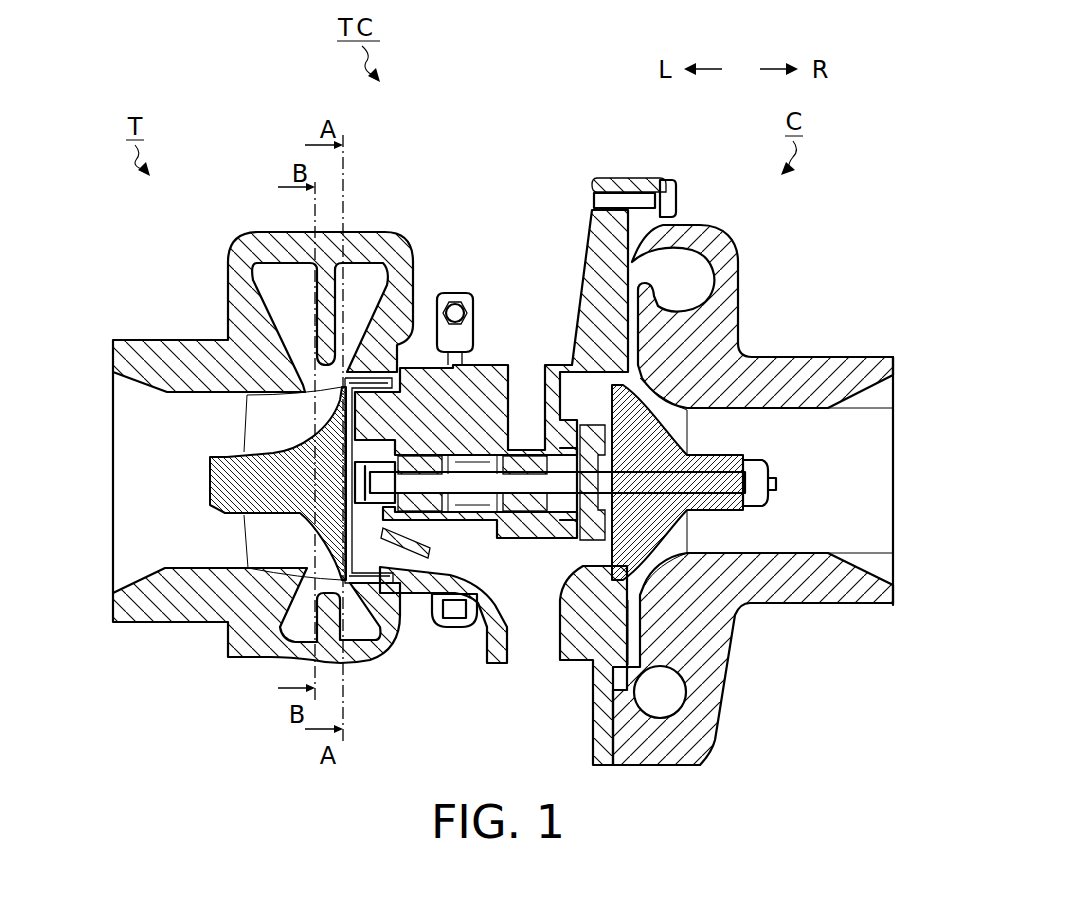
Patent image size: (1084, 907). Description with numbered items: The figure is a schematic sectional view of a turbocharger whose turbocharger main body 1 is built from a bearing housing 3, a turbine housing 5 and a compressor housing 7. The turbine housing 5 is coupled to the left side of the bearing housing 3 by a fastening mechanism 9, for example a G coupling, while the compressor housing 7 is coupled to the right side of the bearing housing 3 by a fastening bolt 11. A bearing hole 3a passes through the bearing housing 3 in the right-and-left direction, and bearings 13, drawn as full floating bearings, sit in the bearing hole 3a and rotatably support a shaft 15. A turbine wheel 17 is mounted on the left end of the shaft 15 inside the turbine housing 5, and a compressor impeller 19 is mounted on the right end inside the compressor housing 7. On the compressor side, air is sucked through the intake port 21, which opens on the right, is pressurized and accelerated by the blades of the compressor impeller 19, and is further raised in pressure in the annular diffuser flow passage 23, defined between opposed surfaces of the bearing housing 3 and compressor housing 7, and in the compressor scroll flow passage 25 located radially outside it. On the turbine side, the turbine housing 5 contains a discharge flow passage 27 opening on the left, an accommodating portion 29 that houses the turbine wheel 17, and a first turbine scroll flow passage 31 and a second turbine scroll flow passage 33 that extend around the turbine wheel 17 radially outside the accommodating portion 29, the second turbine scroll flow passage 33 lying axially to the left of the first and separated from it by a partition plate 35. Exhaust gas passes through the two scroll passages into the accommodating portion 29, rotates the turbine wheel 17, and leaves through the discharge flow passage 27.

The turbocharger main body 1 is at (442, 134).
The bearing housing 3 is at (592, 230).
The bearing hole 3a is at (450, 500).
The turbine housing 5 is at (160, 340).
The compressor housing 7 is at (740, 310).
The fastening mechanism 9 is at (455, 290).
The fastening bolt 11 is at (672, 180).
The bearings 13 is at (516, 448).
The shaft 15 is at (473, 483).
The turbine wheel 17 is at (245, 430).
The compressor impeller 19 is at (728, 440).
The intake port 21 is at (893, 456).
The diffuser flow passage 23 is at (632, 672).
The compressor scroll flow passage 25 is at (682, 692).
The discharge flow passage 27 is at (185, 560).
The accommodating portion 29 is at (278, 392).
The first turbine scroll flow passage 31 is at (355, 637).
The second turbine scroll flow passage 33 is at (300, 640).
The partition plate 35 is at (362, 648).